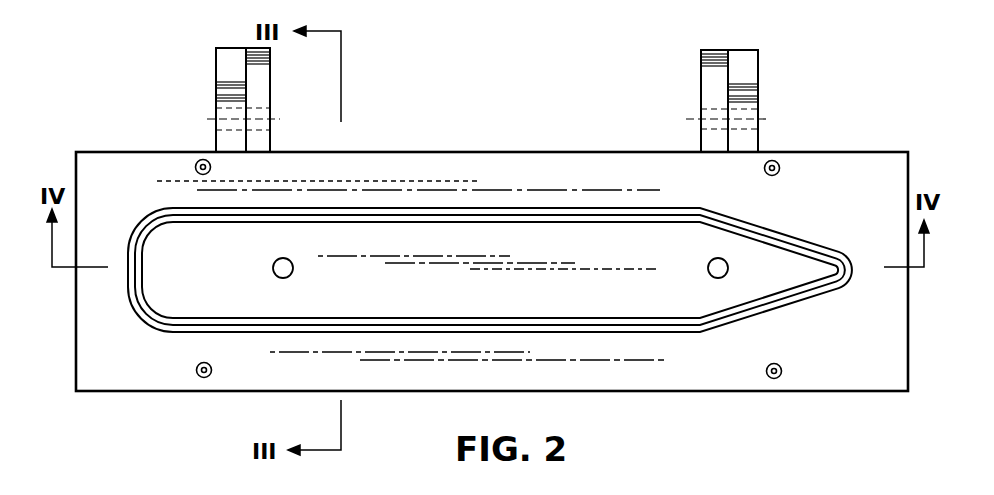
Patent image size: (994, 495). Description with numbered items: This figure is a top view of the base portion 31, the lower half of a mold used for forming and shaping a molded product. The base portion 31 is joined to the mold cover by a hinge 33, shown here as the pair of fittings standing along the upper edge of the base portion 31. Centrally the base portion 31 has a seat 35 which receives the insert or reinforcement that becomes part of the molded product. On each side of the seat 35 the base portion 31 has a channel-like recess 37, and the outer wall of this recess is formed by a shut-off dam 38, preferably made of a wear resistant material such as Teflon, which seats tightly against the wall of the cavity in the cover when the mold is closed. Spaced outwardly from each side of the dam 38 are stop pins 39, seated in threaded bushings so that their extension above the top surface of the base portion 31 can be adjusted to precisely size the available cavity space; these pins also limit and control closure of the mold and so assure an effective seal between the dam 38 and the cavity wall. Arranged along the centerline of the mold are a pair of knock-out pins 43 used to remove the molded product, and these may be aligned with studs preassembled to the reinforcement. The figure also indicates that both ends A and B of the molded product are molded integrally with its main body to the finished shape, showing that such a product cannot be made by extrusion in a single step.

The base portion 31 is at (824, 153).
The hinge 33 is at (203, 113).
The seat 35 is at (602, 254).
The channel-like recess 37 is at (432, 215).
The shut-off dam 38 is at (372, 207).
The stop pins 39 is at (777, 158).
The knock-out pins 43 is at (292, 276).
The end A of the molded product A is at (177, 287).
The end B of the molded product B is at (806, 274).